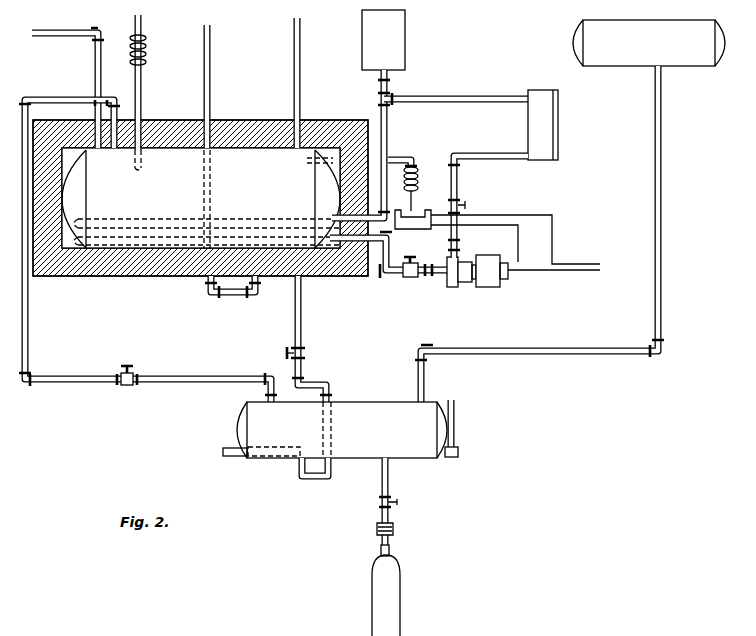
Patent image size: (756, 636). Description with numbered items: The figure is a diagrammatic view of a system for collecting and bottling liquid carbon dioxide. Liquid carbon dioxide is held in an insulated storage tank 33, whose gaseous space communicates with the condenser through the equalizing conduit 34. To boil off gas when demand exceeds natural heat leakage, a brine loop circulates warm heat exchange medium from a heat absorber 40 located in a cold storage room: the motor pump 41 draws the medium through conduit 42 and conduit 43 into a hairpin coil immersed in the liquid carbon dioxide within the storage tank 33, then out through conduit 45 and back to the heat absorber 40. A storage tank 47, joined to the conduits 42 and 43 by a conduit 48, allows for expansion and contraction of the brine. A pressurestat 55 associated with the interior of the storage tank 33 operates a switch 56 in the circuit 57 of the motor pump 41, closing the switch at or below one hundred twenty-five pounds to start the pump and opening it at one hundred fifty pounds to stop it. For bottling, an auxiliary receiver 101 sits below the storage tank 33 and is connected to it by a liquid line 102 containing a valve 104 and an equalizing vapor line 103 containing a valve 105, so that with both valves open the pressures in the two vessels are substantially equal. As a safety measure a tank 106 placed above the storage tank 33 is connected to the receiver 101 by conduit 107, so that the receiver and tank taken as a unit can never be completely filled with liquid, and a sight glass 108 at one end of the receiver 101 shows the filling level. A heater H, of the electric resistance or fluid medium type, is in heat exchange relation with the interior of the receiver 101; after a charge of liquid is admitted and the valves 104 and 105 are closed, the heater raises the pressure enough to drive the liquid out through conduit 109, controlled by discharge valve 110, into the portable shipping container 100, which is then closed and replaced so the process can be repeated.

The storage tank 33 is at (201, 199).
The equalizing conduit 34 is at (250, 212).
The heat absorber 40 is at (546, 126).
The motor pump 41 is at (490, 278).
The conduit 42 is at (436, 90).
The conduit 43 is at (388, 141).
The conduit 45 is at (388, 278).
The storage tank 47 is at (383, 40).
The conduit 48 is at (378, 83).
The pressurestat 55 is at (419, 177).
The switch 56 is at (409, 222).
The circuit 57 is at (594, 272).
The portable container 100 is at (396, 620).
The auxiliary receiver 101 is at (335, 439).
The liquid line 102 is at (303, 323).
The equalizing vapor line 103 is at (29, 337).
The valve 104 is at (306, 353).
The valve 105 is at (129, 370).
The tank 106 is at (649, 43).
The conduit 107 is at (663, 310).
The sight glass 108 is at (456, 415).
The conduit 109 is at (390, 484).
The discharge valve 110 is at (399, 504).
The heater H is at (268, 452).